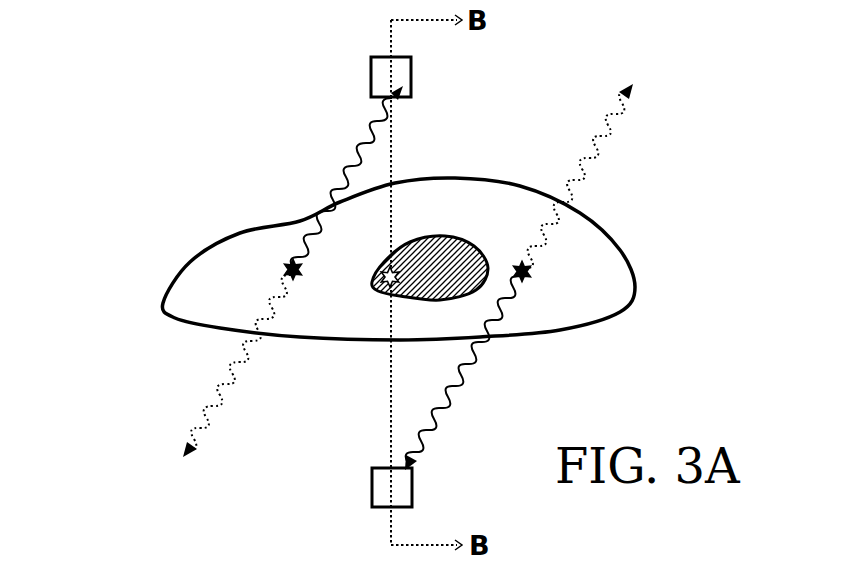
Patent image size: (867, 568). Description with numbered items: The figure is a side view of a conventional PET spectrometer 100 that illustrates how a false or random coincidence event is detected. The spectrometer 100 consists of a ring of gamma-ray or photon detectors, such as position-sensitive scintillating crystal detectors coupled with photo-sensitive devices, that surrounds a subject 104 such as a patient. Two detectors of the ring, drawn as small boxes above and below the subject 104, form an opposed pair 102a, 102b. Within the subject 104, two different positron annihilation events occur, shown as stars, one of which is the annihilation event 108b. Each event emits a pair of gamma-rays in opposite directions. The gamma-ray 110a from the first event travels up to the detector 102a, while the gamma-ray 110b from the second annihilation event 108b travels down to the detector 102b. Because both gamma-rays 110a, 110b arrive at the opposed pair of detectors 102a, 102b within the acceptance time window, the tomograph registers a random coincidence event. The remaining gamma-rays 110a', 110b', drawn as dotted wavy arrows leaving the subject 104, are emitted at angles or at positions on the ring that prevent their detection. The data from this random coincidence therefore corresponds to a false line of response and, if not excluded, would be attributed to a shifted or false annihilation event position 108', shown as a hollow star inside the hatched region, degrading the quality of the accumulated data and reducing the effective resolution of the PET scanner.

The PET spectrometer 100 is at (233, 85).
The detector 102a is at (411, 77).
The detector 102b is at (372, 482).
The subject 104 is at (580, 263).
The false annihilation event position 108' is at (375, 336).
The positron annihilation event 108b is at (285, 264).
The gamma-ray 110a is at (270, 177).
The gamma-ray 110a' is at (654, 176).
The gamma-ray 110b is at (541, 373).
The gamma-ray 110b' is at (158, 366).